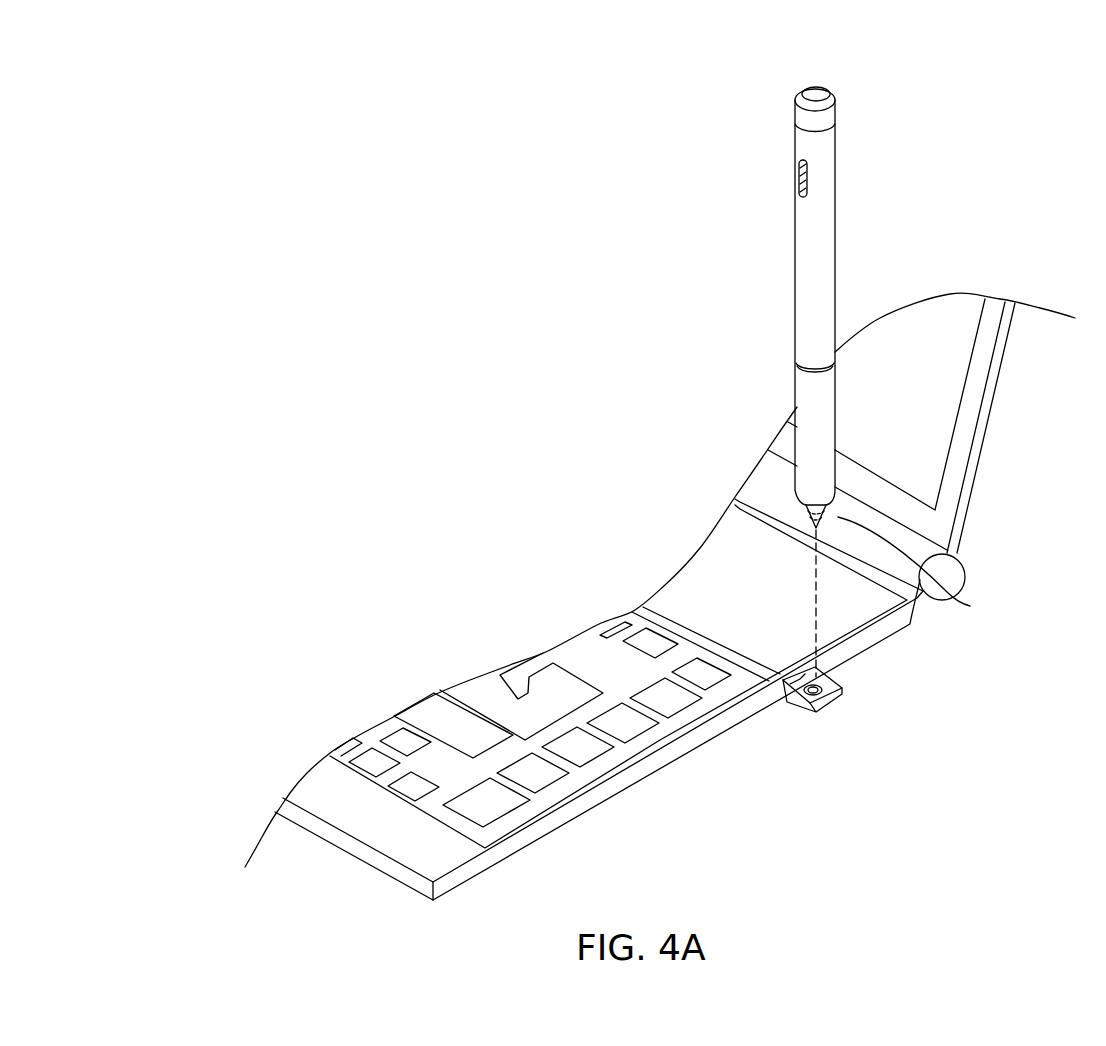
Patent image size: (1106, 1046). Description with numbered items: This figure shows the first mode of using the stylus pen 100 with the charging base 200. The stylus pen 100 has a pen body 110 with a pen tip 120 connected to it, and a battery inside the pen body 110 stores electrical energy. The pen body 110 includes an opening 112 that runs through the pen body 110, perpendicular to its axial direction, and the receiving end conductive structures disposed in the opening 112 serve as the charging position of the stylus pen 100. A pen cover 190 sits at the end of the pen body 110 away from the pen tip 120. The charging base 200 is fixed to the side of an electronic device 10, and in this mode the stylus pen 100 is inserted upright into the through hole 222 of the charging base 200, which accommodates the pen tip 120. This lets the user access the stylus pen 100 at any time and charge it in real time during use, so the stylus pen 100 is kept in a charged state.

The electronic device 10 is at (883, 633).
The stylus pen 100 is at (848, 210).
The pen body 110 is at (805, 288).
The opening 112 is at (795, 184).
The pen tip 120 is at (960, 602).
The pen cover 190 is at (816, 93).
The charging base 200 is at (833, 713).
The through hole 222 is at (805, 668).